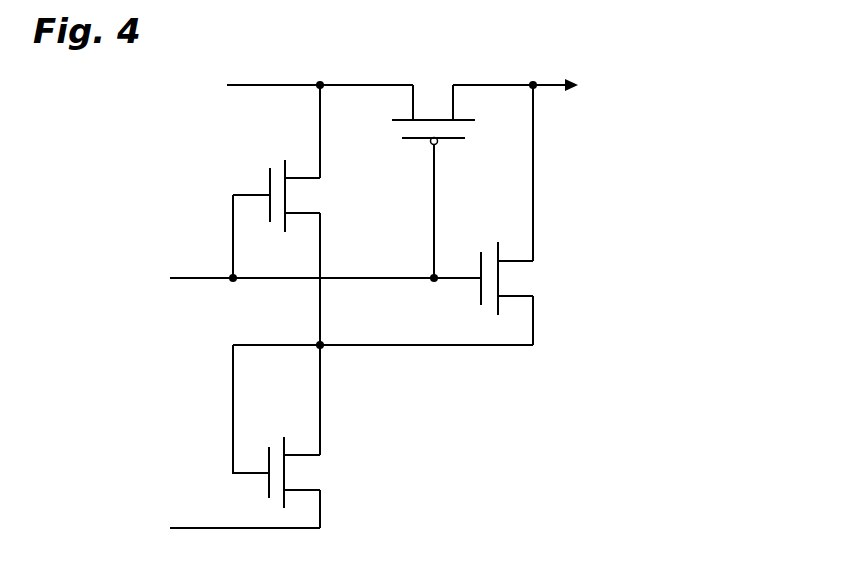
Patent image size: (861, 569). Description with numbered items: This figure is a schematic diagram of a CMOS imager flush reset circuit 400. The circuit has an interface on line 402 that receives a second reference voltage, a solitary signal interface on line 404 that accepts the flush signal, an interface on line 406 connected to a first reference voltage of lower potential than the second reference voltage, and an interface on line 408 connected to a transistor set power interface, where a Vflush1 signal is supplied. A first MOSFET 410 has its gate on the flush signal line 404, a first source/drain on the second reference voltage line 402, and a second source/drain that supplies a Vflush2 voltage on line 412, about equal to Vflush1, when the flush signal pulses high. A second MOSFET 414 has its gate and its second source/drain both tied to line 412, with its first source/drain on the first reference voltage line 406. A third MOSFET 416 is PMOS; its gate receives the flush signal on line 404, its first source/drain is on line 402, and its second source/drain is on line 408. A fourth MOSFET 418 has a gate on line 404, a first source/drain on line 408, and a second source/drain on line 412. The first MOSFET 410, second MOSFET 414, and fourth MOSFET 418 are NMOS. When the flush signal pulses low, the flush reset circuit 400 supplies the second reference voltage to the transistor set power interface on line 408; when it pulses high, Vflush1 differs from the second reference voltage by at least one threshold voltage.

The flush reset circuit 400 is at (546, 450).
The second reference voltage line 402 is at (273, 84).
The flush signal line 404 is at (200, 282).
The first reference voltage line 406 is at (212, 527).
The transistor set power interface line 408 is at (514, 85).
The first MOSFET 410 is at (348, 178).
The Vflush2 line 412 is at (233, 435).
The second MOSFET 414 is at (366, 450).
The third MOSFET 416 is at (436, 74).
The fourth MOSFET 418 is at (571, 260).